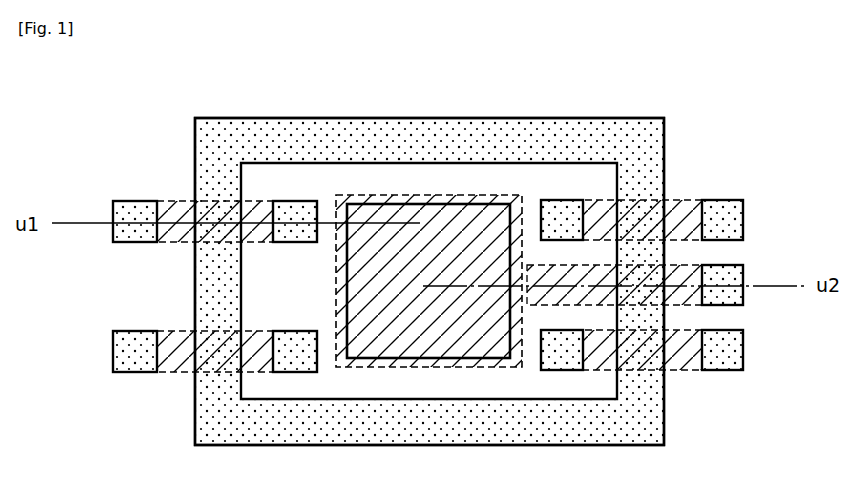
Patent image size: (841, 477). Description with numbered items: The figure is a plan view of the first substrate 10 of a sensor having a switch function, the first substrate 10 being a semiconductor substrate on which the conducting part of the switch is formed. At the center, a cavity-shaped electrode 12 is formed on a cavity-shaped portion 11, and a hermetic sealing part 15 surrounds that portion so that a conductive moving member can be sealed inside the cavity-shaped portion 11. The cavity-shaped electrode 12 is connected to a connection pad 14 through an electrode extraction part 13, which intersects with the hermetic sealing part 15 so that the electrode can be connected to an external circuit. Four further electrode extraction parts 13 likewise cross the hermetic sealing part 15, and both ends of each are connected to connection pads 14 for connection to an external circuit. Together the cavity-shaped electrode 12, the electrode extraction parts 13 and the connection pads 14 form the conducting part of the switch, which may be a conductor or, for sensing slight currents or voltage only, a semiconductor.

The first substrate 10 is at (813, 82).
The cavity-shaped portion 11 is at (432, 240).
The cavity-shaped electrode 12 is at (505, 198).
The electrode extraction part 13 is at (170, 244).
The connection pad 14 is at (132, 244).
The hermetic sealing part 15 is at (335, 140).